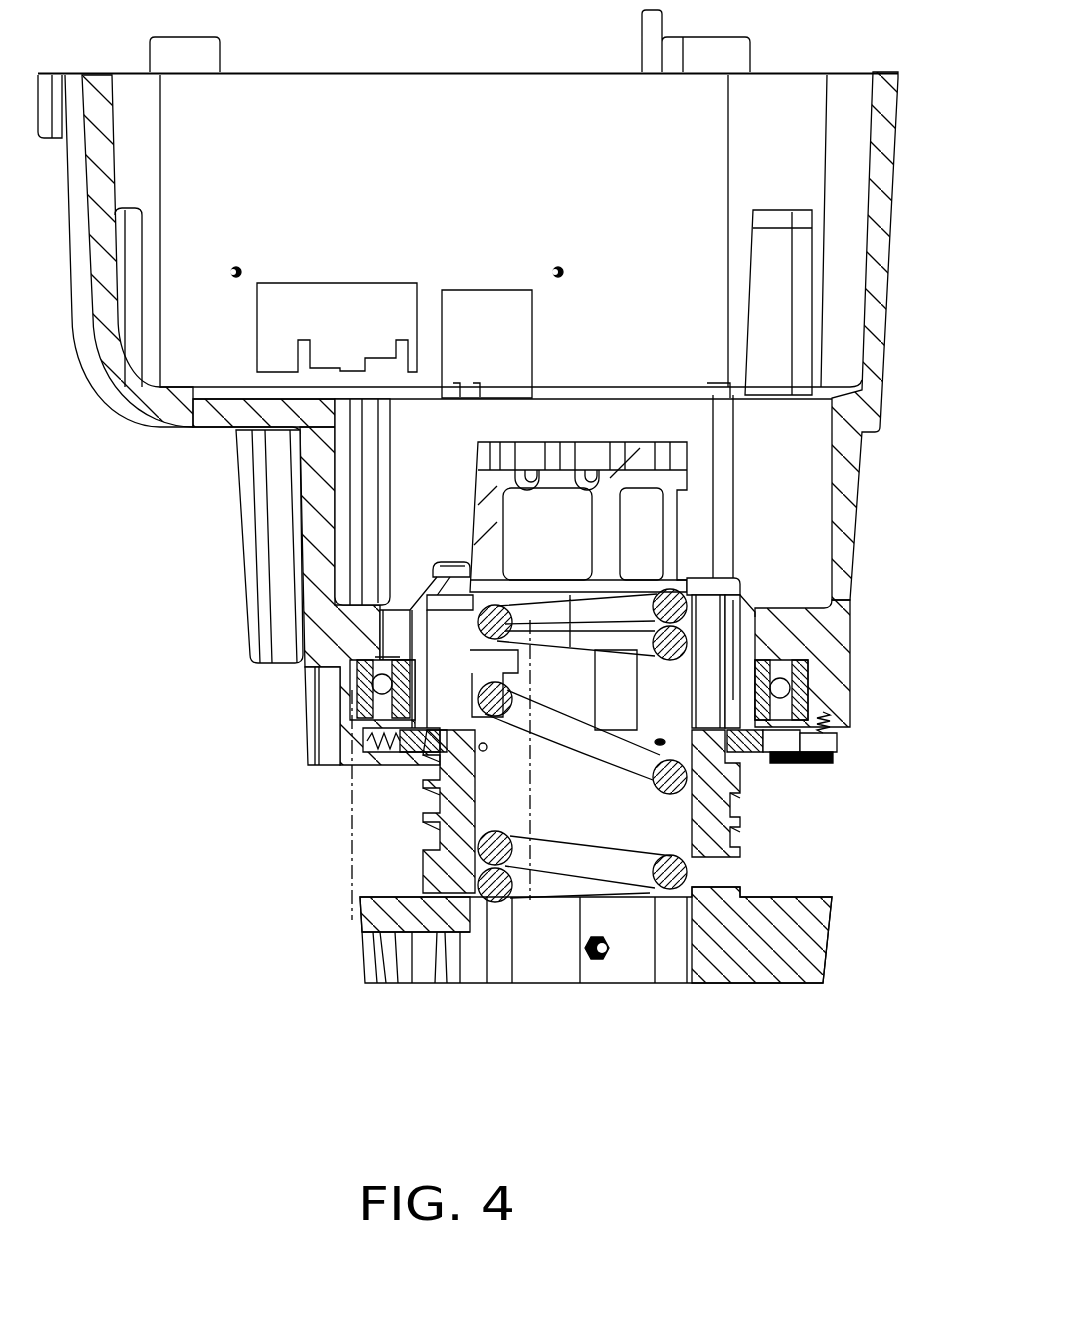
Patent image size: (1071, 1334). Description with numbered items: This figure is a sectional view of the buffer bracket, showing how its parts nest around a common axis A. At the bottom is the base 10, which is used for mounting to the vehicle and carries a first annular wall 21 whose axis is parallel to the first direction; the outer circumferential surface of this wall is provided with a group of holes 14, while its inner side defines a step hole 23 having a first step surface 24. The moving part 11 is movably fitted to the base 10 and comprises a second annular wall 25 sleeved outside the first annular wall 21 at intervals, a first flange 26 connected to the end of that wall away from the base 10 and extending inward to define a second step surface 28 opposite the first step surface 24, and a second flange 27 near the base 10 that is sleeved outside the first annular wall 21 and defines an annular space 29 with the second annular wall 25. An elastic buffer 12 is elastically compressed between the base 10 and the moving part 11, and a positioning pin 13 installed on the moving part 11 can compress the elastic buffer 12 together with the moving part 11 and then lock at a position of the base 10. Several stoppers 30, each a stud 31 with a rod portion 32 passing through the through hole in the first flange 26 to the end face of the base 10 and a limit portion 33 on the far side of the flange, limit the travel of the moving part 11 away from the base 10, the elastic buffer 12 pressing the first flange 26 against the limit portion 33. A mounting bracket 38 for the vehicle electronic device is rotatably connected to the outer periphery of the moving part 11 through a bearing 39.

The base 10 is at (822, 895).
The moving part 11 is at (757, 594).
The elastic buffer 12 is at (562, 816).
The positioning pin 13 is at (777, 723).
The group of holes 14 is at (740, 813).
The first annular wall 21 is at (448, 848).
The step hole 23 is at (583, 825).
The first step surface 24 is at (693, 877).
The second annular wall 25 is at (748, 638).
The first flange 26 is at (710, 585).
The second flange 27 is at (800, 745).
The second step surface 28 is at (420, 616).
The annular space 29 is at (738, 708).
The stopper 30 is at (296, 547).
The stud 31 is at (450, 553).
The rod portion 32 is at (388, 641).
The limit portion 33 is at (433, 568).
The mounting bracket 38 is at (858, 543).
The bearing 39 is at (815, 668).
The axis A is at (352, 782).